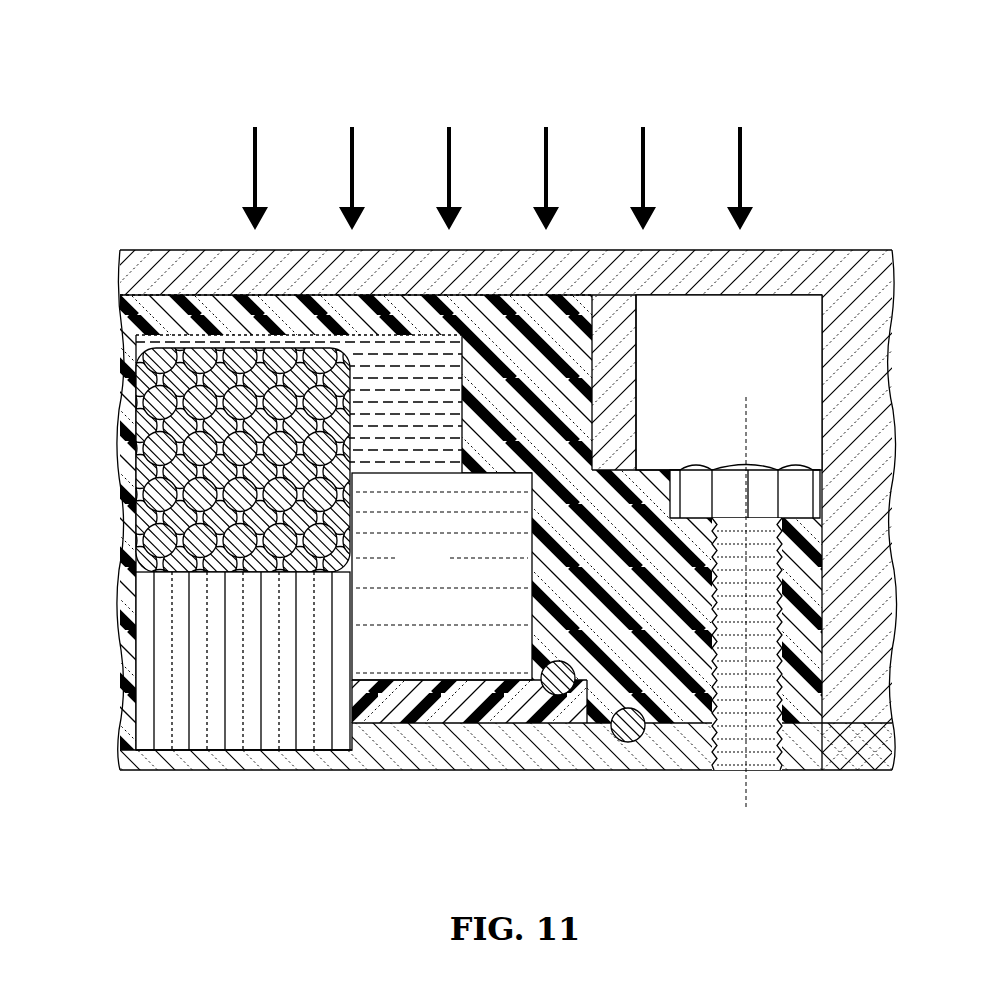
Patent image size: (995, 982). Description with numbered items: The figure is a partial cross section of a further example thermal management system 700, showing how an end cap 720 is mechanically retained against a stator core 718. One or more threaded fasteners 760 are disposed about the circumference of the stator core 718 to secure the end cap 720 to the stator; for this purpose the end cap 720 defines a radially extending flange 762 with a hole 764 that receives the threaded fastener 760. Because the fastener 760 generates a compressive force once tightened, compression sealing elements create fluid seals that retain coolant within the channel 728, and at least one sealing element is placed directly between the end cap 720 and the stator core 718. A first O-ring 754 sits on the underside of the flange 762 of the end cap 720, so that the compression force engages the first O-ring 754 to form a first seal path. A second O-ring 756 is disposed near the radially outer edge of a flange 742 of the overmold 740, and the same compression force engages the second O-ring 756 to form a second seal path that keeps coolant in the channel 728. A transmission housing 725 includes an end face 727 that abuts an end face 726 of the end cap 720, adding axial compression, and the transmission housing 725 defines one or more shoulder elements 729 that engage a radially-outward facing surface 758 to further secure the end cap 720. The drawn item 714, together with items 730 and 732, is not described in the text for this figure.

The thermal management system 700 is at (712, 67).
The base plate portion 714 is at (243, 758).
The stator core 718 is at (473, 755).
The end cap 720 is at (152, 317).
The transmission housing 725 is at (860, 300).
The end face 726 is at (230, 308).
The end face 727 is at (783, 250).
The channel 728 is at (442, 576).
The shoulder element 729 is at (640, 405).
The corrugated core 730 is at (190, 635).
The woven fabric insert 732 is at (140, 383).
The overmold 740 is at (405, 705).
The flange 742 is at (712, 672).
The first O-ring 754 is at (628, 745).
The second O-ring 756 is at (560, 700).
The radially-outward facing surface 758 is at (636, 345).
The threaded fastener 760 is at (793, 492).
The radially extending flange 762 is at (820, 617).
The hole 764 is at (790, 687).